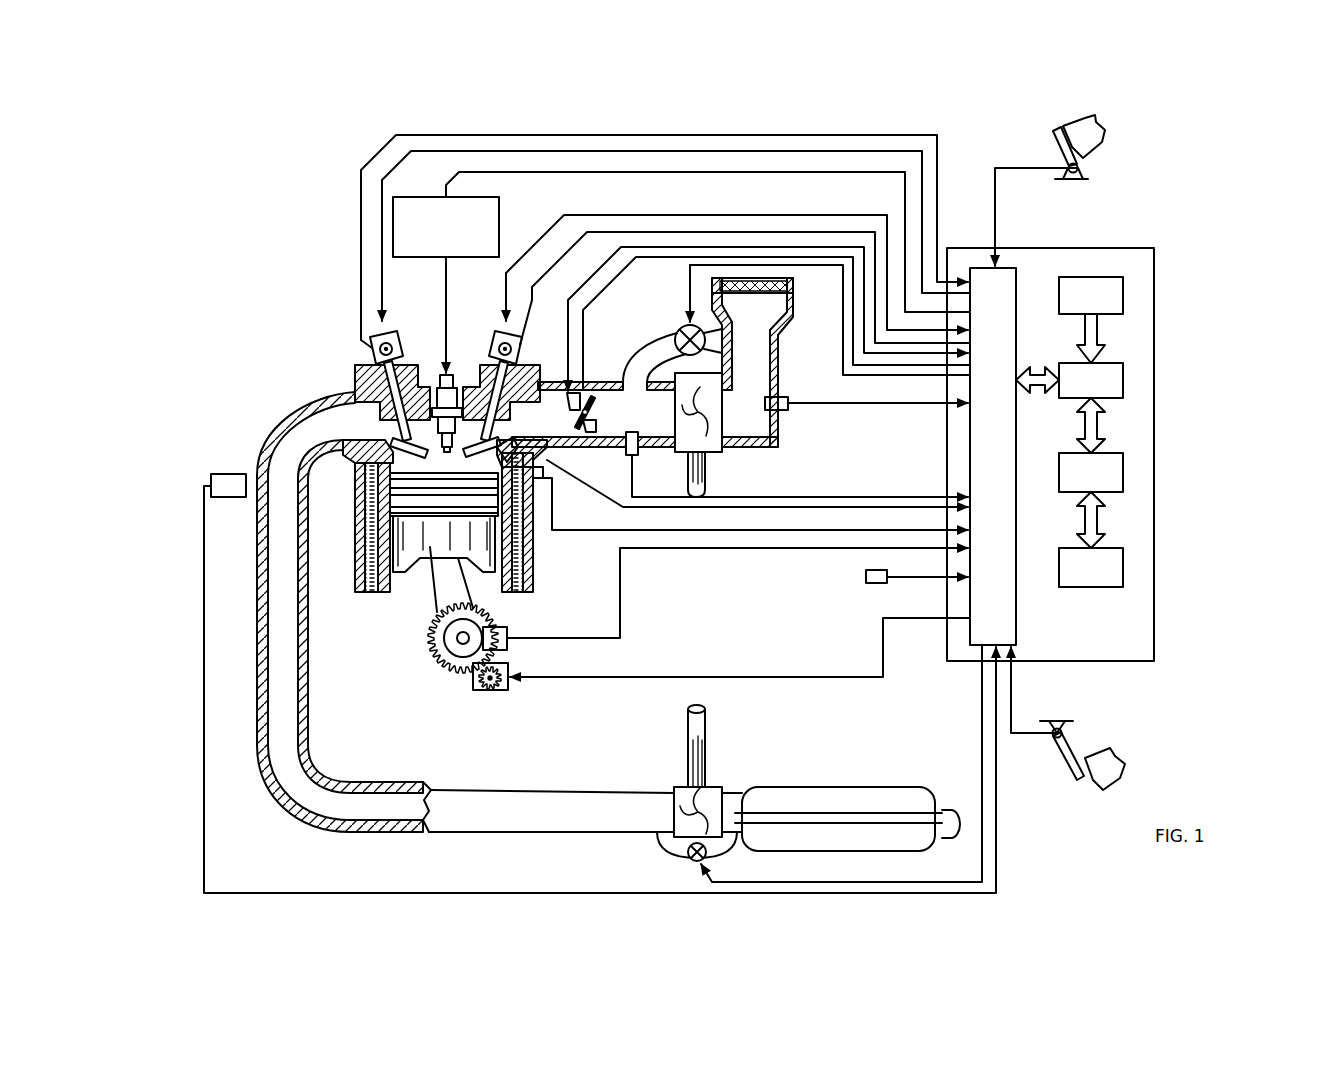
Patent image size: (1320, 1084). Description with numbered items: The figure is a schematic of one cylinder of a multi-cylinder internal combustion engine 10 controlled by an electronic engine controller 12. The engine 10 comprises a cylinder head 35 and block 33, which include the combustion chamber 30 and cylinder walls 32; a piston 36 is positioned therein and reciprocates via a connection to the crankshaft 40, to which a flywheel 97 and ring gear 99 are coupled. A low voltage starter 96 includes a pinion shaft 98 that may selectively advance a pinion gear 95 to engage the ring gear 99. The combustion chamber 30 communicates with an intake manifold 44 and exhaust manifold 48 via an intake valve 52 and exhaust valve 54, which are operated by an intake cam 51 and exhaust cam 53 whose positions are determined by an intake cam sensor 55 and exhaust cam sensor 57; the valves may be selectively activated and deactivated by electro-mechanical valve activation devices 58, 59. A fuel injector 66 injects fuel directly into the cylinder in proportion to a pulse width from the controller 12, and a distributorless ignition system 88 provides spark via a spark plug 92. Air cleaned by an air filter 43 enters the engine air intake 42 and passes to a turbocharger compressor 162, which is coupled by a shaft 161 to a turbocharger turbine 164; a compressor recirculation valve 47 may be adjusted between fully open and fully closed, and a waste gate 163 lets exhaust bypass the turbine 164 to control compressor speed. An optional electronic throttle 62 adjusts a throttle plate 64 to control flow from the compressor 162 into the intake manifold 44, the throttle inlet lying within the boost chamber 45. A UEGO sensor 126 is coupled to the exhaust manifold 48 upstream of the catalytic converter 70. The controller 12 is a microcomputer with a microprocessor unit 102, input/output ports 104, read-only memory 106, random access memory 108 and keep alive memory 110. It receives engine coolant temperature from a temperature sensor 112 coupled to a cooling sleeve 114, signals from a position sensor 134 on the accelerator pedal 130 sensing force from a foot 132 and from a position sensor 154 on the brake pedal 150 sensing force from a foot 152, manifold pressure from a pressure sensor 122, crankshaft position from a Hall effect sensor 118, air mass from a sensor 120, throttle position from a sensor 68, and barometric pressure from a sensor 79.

The internal combustion engine 10 is at (417, 495).
The electronic engine controller 12 is at (1089, 441).
The combustion chamber 30 is at (455, 456).
The cylinder walls 32 is at (395, 588).
The block 33 is at (353, 490).
The cylinder head 35 is at (341, 361).
The piston 36 is at (430, 549).
The crankshaft 40 is at (448, 668).
The engine air intake 42 is at (780, 356).
The air filter 43 is at (769, 292).
The intake manifold 44 is at (538, 422).
The boost chamber 45 is at (630, 425).
The compressor recirculation valve 47 is at (681, 329).
The exhaust manifold 48 is at (314, 432).
The intake cam 51 is at (500, 340).
The intake valve 52 is at (488, 430).
The exhaust cam 53 is at (380, 343).
The exhaust valve 54 is at (366, 400).
The intake cam sensor 55 is at (518, 350).
The exhaust cam sensor 57 is at (372, 352).
The valve activation device 58 is at (398, 350).
The valve activation device 59 is at (499, 356).
The electronic throttle 62 is at (592, 410).
The throttle plate 64 is at (596, 424).
The fuel injector 66 is at (541, 479).
The throttle position sensor 68 is at (570, 393).
The catalytic converter 70 is at (781, 787).
The barometric pressure sensor 79 is at (873, 584).
The distributorless ignition system 88 is at (405, 197).
The spark plug 92 is at (447, 372).
The pinion gear 95 is at (499, 690).
The starter 96 is at (507, 688).
The flywheel 97 is at (439, 648).
The pinion shaft 98 is at (487, 688).
The ring gear 99 is at (457, 677).
The microprocessor unit 102 is at (1123, 381).
The input/output ports 104 is at (1018, 277).
The read-only memory 106 is at (1123, 296).
The random access memory 108 is at (1123, 473).
The keep alive memory 110 is at (1123, 566).
The temperature sensor 112 is at (552, 490).
The cooling sleeve 114 is at (524, 551).
The Hall effect sensor 118 is at (507, 633).
The air mass sensor 120 is at (790, 398).
The pressure sensor 122 is at (625, 452).
The Universal Exhaust Gas Oxygen sensor 126 is at (211, 482).
The accelerator pedal 130 is at (1053, 139).
The foot 132 is at (1105, 134).
The position sensor 134 is at (1080, 169).
The brake pedal 150 is at (1076, 780).
The foot 152 is at (1108, 752).
The position sensor 154 is at (1050, 732).
The shaft 161 is at (688, 471).
The turbocharger compressor 162 is at (710, 450).
The waste gate 163 is at (692, 862).
The turbocharger turbine 164 is at (680, 787).